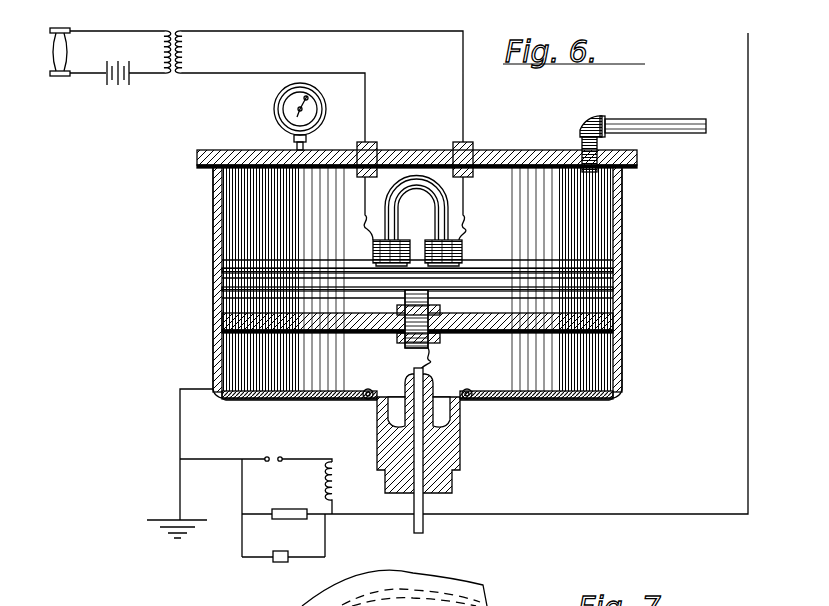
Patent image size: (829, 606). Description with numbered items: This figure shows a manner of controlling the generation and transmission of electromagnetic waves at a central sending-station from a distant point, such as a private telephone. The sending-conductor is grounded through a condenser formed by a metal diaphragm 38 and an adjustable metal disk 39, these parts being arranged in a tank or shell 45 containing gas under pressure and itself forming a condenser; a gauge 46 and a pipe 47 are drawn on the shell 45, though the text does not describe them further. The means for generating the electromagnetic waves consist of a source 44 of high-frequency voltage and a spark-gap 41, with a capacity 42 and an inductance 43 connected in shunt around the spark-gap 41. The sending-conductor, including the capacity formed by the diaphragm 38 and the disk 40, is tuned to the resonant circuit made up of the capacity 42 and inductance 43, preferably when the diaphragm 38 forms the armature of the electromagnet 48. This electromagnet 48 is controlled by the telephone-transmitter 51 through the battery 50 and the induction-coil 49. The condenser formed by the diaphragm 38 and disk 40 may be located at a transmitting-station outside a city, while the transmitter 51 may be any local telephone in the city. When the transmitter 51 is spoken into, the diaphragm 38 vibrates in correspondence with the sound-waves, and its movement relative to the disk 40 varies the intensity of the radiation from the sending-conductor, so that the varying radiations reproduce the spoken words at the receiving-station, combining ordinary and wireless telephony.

The metal diaphragm 38 is at (582, 272).
The adjustable metal disk 39 is at (447, 285).
The disk 40 is at (573, 297).
The spark-gap 41 is at (256, 448).
The capacity 42 is at (274, 508).
The inductance 43 is at (343, 488).
The source of high-frequency voltage 44 is at (283, 548).
The tank or shell 45 is at (248, 217).
The pressure gauge 46 is at (280, 109).
The pipe 47 is at (632, 109).
The electromagnet 48 is at (449, 208).
The induction-coil 49 is at (311, 74).
The battery 50 is at (132, 82).
The telephone-transmitter 51 is at (94, 52).